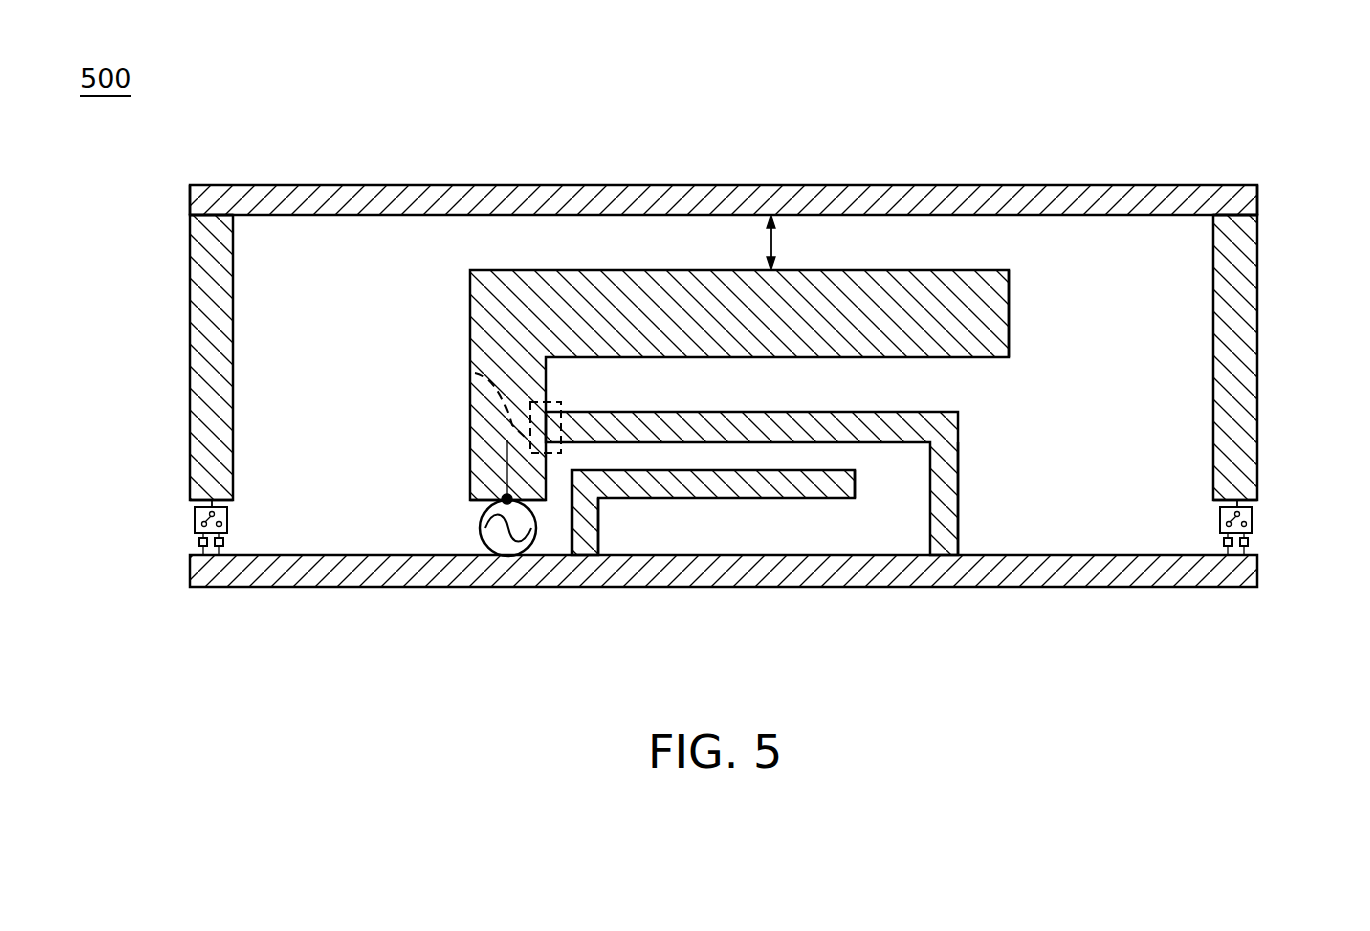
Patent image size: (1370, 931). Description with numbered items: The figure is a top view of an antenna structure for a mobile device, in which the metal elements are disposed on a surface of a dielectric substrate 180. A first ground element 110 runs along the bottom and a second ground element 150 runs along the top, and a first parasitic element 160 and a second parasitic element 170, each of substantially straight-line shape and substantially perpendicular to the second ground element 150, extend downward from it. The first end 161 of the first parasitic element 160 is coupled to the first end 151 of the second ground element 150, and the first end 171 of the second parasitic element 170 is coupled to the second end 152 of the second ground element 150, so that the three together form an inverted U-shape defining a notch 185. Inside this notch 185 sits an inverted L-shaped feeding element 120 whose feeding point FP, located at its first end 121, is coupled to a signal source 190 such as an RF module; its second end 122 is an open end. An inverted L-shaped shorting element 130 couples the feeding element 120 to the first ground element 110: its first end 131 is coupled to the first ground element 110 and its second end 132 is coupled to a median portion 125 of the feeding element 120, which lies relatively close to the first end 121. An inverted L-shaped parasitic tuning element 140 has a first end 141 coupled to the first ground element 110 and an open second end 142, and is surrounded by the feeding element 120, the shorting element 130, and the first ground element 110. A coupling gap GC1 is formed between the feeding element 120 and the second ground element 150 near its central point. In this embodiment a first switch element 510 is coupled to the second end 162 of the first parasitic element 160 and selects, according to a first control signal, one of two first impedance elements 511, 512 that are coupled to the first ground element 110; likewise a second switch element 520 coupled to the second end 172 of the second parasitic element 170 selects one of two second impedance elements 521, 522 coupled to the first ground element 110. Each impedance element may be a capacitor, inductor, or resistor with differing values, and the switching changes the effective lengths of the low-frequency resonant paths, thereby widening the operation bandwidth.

The first ground element 110 is at (720, 573).
The feeding element 120 is at (497, 312).
The first end of the feeding element 121 is at (487, 497).
The second end of the feeding element 122 is at (1010, 302).
The median portion of the feeding element 125 is at (472, 372).
The feeding point FP is at (507, 440).
The shorting element 130 is at (755, 428).
The first end of the shorting element 131 is at (940, 552).
The second end of the shorting element 132 is at (522, 410).
The parasitic tuning element 140 is at (718, 487).
The first end of the parasitic tuning element 141 is at (595, 552).
The second end of the parasitic tuning element 142 is at (858, 485).
The second ground element 150 is at (709, 200).
The first end of the second ground element 151 is at (190, 200).
The second end of the second ground element 152 is at (1257, 198).
The first parasitic element 160 is at (208, 352).
The first end of the first parasitic element 161 is at (212, 230).
The second end of the first parasitic element 162 is at (212, 492).
The second parasitic element 170 is at (1245, 345).
The first end of the second parasitic element 171 is at (1235, 228).
The second end of the second parasitic element 172 is at (1235, 492).
The dielectric substrate 180 is at (195, 527).
The notch 185 is at (337, 245).
The signal source 190 is at (480, 530).
The first switch element 510 is at (223, 570).
The first impedance element 511 is at (200, 548).
The first impedance element 512 is at (222, 548).
The second switch element 520 is at (1228, 570).
The second impedance element 521 is at (1226, 548).
The second impedance element 522 is at (1248, 546).
The coupling gap GC1 is at (802, 242).